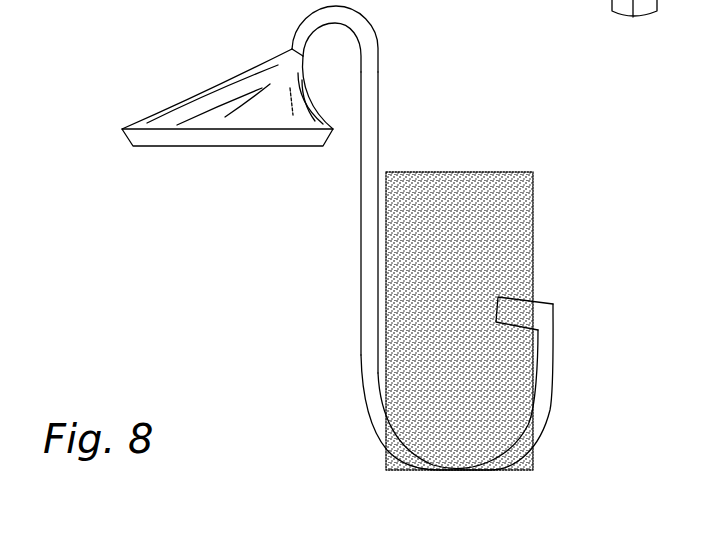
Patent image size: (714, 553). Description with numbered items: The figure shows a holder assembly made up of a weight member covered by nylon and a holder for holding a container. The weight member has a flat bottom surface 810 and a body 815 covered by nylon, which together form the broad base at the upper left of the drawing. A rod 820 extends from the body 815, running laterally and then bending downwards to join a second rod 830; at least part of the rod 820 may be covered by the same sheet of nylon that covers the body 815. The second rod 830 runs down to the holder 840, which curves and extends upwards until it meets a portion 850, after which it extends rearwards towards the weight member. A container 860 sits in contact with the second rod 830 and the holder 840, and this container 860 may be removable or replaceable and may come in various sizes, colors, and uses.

The flat bottom surface 810 is at (247, 139).
The body 815 is at (217, 100).
The rod 820 is at (353, 6).
The second rod 830 is at (376, 150).
The holder 840 is at (547, 408).
The portion 850 is at (552, 305).
The container 860 is at (532, 192).